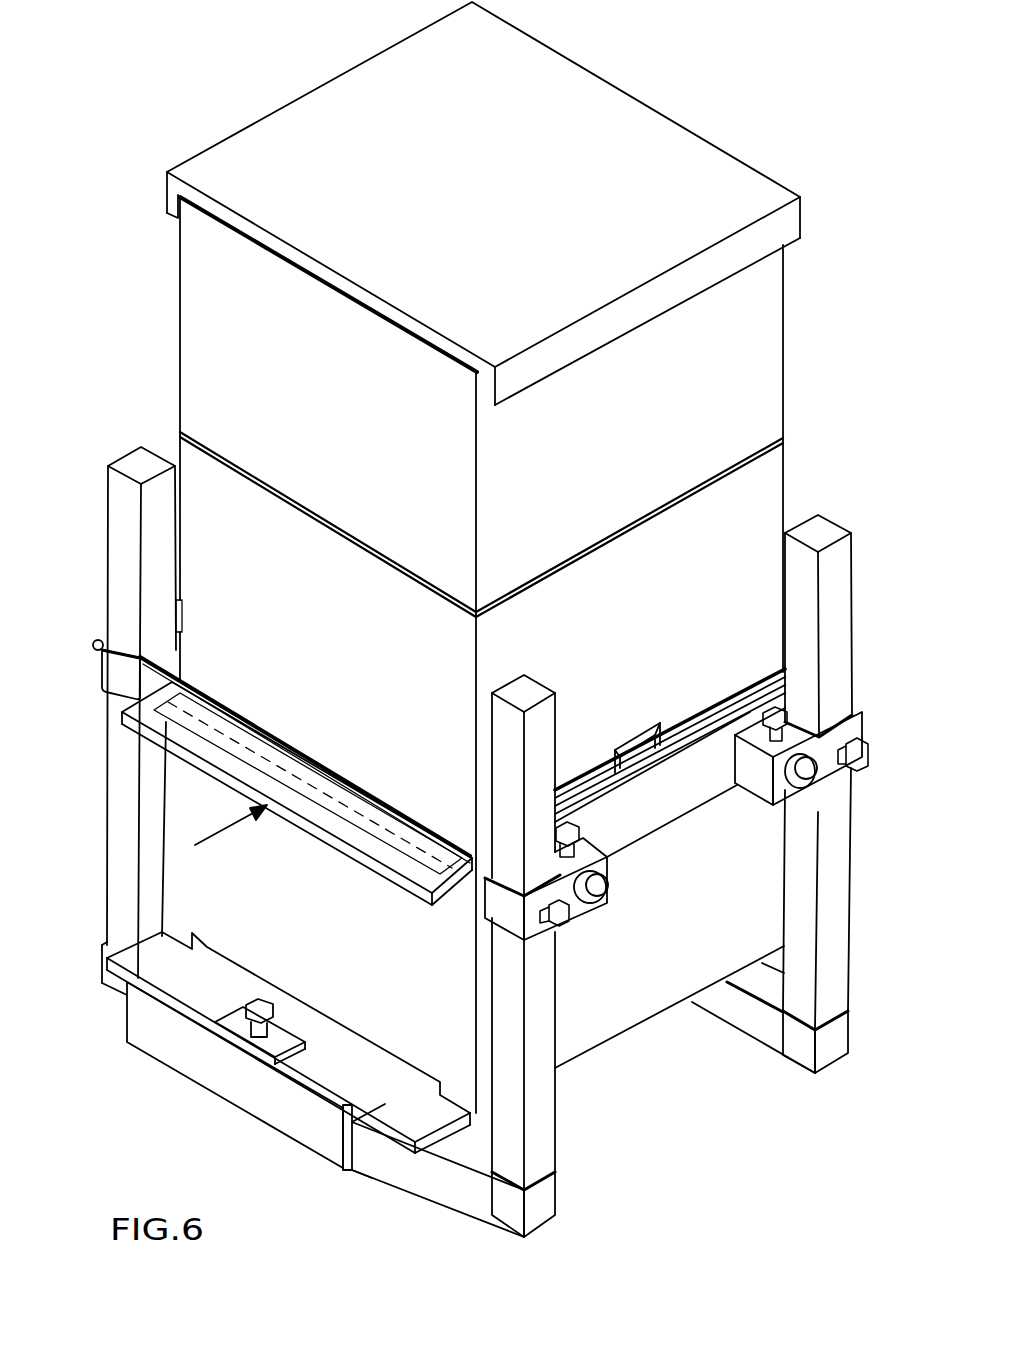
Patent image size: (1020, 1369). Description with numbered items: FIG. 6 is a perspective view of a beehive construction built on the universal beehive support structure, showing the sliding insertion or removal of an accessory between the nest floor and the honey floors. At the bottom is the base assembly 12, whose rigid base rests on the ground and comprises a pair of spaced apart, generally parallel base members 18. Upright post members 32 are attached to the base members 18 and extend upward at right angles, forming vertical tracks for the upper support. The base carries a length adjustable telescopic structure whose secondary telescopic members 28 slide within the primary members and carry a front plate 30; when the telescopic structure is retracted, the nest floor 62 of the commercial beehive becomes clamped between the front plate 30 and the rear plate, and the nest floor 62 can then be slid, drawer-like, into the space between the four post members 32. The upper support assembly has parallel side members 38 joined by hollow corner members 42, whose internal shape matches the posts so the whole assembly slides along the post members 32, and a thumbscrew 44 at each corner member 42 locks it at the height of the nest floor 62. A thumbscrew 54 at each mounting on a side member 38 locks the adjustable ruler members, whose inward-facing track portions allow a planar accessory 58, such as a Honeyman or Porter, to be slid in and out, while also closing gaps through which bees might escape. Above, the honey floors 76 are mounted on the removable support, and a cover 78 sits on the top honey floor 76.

The base assembly 12 is at (748, 1148).
The base members 18 is at (470, 1195).
The telescopic members 28 is at (367, 1145).
The front plate 30 is at (240, 1095).
The post members 32 is at (120, 575).
The side members 38 is at (707, 790).
The corner members 42 is at (855, 732).
The thumbscrew 44 is at (866, 758).
The thumbscrew 54 is at (776, 705).
The planar accessory 58 is at (200, 752).
The nest floor 62 is at (683, 992).
The honey floors 76 is at (735, 385).
The cover 78 is at (680, 180).